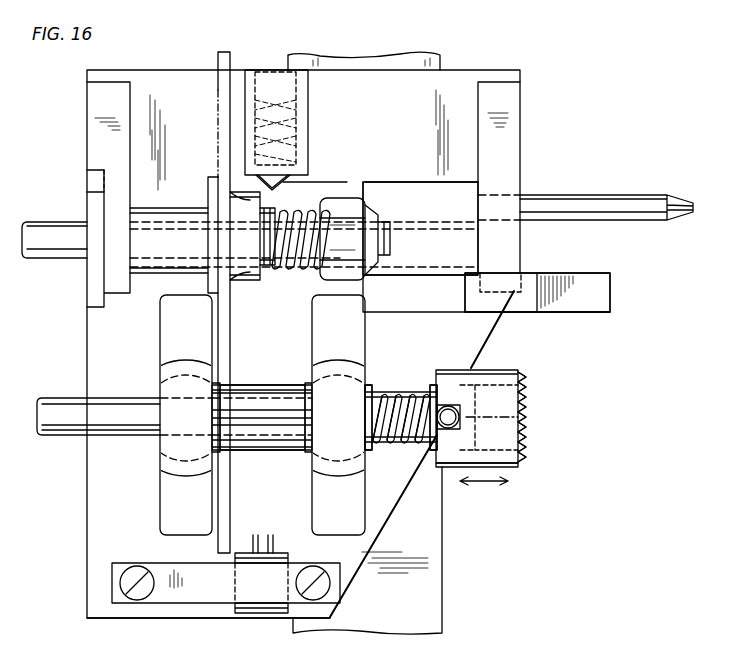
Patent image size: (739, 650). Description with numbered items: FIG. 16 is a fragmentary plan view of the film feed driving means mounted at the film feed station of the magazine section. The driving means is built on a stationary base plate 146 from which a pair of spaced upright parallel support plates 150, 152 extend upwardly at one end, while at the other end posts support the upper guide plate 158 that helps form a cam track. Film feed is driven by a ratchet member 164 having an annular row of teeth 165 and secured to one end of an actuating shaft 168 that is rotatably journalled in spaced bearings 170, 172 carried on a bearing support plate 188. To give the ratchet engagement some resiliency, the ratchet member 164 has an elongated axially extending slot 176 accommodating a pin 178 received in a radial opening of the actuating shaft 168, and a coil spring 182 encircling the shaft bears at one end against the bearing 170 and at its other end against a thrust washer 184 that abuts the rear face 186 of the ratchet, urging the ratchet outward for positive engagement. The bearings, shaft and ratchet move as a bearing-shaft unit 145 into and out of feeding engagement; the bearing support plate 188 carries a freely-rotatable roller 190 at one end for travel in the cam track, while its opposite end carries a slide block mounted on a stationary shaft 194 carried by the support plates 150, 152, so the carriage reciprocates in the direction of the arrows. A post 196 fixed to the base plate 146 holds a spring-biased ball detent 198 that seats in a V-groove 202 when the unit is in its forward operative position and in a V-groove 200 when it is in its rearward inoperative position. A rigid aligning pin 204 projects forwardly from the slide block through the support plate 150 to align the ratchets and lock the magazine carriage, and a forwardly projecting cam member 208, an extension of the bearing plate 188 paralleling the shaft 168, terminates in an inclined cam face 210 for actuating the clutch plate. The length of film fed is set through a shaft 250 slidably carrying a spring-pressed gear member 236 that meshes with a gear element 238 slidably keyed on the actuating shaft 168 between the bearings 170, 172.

The stationary base plate 146 is at (100, 332).
The upright support plate 152 is at (94, 134).
The upright support plate 150 is at (507, 108).
The spring-pressed gear member 236 is at (220, 140).
The post 196 is at (305, 100).
The spring-biased ball detent 198 is at (309, 140).
The V-groove 202 is at (278, 185).
The shaft 250 is at (70, 200).
The V-groove 200 is at (366, 182).
The stationary shaft 194 is at (458, 214).
The aligning pin 204 is at (612, 186).
The cam member 208 is at (604, 268).
The inclined cam face 210 is at (594, 298).
The bearing 172 is at (166, 370).
The bearing 170 is at (342, 365).
The actuating shaft 168 is at (74, 438).
The gear element 238 is at (248, 388).
The bearing support plate 188 is at (290, 494).
The coil spring 182 is at (380, 393).
The thrust washer 184 is at (430, 386).
The rear face 186 is at (439, 372).
The ratchet member 164 is at (479, 370).
The pin 178 is at (460, 418).
The slot 176 is at (462, 440).
The teeth 165 is at (521, 464).
The upper guide plate 158 is at (192, 598).
The roller 190 is at (282, 560).
The bearing-shaft unit 145 is at (146, 507).